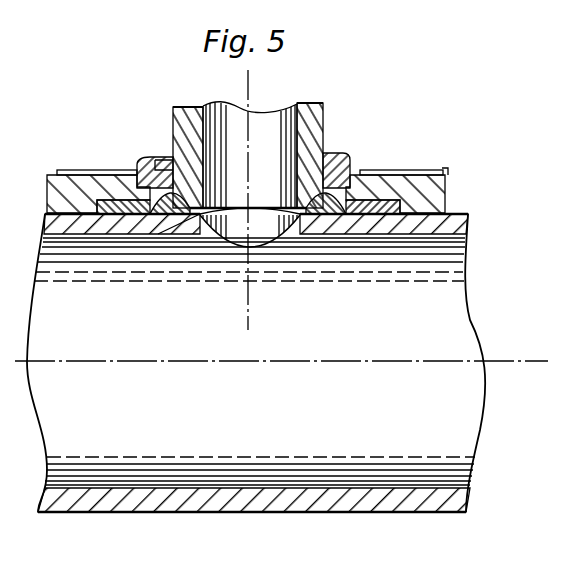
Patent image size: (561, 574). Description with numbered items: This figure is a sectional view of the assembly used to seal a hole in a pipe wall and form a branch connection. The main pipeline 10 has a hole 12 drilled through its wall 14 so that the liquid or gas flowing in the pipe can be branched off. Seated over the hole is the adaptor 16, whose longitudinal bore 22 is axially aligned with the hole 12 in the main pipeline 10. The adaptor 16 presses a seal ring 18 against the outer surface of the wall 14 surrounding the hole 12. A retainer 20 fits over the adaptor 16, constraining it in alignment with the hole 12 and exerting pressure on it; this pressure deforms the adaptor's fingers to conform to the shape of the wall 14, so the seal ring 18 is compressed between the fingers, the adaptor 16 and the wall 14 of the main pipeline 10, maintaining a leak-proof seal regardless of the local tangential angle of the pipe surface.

The main pipeline 10 is at (396, 512).
The hole 12 is at (272, 236).
The wall 14 is at (167, 234).
The adaptor 16 is at (324, 122).
The seal ring 18 is at (140, 166).
The retainer 20 is at (457, 191).
The longitudinal bore 22 is at (265, 138).